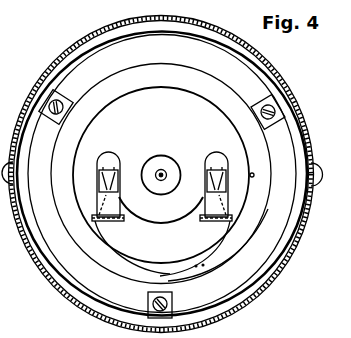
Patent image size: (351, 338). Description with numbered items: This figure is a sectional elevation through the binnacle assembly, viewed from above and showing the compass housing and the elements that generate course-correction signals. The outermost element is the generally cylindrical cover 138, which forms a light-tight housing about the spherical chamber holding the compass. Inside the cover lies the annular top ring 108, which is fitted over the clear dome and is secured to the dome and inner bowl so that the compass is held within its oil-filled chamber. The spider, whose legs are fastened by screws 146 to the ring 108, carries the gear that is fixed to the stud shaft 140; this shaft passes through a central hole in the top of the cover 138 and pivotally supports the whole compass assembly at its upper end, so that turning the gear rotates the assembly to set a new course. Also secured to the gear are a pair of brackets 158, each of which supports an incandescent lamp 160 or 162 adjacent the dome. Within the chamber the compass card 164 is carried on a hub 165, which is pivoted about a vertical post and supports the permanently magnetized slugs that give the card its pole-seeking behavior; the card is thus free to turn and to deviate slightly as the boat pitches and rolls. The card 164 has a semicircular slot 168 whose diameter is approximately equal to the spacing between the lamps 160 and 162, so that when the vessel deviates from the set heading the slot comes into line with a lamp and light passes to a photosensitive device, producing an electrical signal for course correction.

The annular top ring 108 is at (54, 254).
The cover 138 is at (101, 33).
The stud shaft 140 is at (319, 192).
The screws 146 is at (147, 299).
The brackets 158 is at (92, 216).
The incandescent lamp 160 is at (117, 140).
The incandescent lamp 162 is at (225, 140).
The compass card 164 is at (181, 84).
The hub 165 is at (160, 155).
The semicircular slot 168 is at (145, 222).